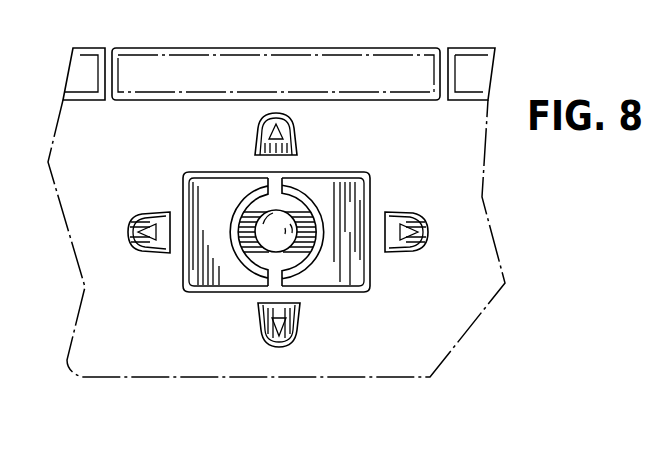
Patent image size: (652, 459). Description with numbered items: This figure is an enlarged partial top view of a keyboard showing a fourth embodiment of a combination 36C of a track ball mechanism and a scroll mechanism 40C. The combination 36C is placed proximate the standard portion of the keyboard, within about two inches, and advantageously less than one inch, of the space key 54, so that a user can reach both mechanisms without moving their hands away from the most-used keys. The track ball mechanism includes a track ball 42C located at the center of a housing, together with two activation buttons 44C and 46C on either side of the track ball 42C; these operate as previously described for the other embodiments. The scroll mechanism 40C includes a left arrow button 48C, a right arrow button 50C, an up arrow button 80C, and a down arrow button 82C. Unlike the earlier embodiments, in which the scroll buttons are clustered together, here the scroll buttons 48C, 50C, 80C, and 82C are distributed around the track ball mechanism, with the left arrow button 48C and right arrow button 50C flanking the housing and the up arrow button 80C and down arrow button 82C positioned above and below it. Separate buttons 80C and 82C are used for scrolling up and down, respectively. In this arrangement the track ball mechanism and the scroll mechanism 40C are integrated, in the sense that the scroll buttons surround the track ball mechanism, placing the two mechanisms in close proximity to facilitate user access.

The combination 36C is at (160, 350).
The scroll mechanism 40C is at (272, 269).
The track ball 42C is at (262, 236).
The activation button 44C is at (193, 261).
The activation button 46C is at (350, 260).
The left arrow button 48C is at (153, 213).
The right arrow button 50C is at (392, 213).
The space key 54 is at (390, 57).
The up arrow button 80C is at (327, 132).
The down arrow button 82C is at (300, 312).